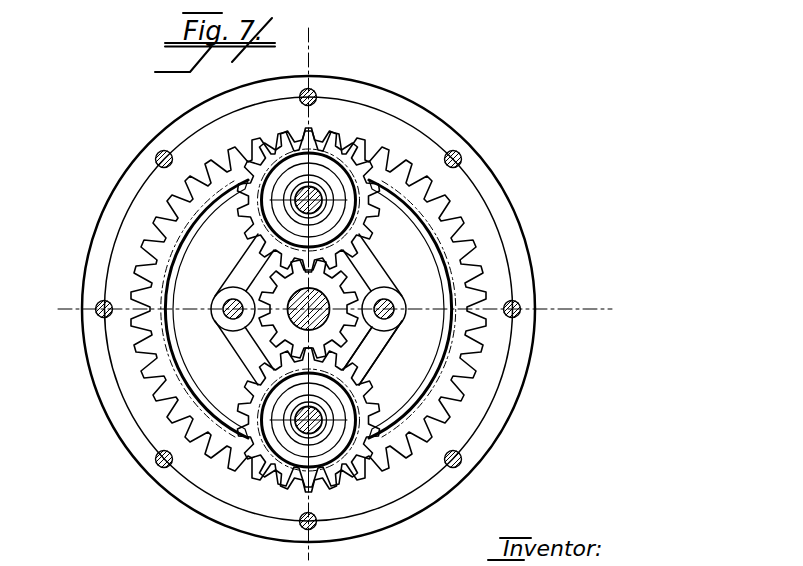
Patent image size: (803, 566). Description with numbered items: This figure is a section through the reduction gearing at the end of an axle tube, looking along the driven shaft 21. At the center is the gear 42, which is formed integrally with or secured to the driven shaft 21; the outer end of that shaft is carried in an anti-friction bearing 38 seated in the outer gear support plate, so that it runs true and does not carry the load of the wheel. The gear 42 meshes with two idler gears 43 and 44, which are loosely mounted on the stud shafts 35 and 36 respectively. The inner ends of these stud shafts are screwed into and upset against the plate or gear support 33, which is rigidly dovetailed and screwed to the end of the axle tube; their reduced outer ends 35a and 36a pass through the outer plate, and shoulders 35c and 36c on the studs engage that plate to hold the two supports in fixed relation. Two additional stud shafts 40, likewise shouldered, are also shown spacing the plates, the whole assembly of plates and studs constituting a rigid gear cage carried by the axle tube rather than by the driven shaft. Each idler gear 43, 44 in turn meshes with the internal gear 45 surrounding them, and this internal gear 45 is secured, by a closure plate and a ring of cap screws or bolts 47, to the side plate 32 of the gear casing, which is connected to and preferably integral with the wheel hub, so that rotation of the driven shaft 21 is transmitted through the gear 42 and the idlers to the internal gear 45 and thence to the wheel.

The driven shaft 21 is at (292, 322).
The side plate 32 is at (299, 309).
The plate or gear support 33 is at (367, 266).
The stud shaft 35 is at (298, 193).
The reduced outer end 35a is at (322, 185).
The shoulder 35c is at (314, 188).
The stud shaft 36 is at (299, 432).
The reduced outer end 36a is at (302, 428).
The shoulder 36c is at (316, 433).
The anti-friction bearing 38 is at (308, 271).
The stud shaft 40 is at (226, 301).
The gear 42 is at (367, 340).
The idler gear 43 is at (417, 213).
The idler gear 44 is at (366, 428).
The internal gear 45 is at (470, 250).
The cap screws or bolts 47 is at (460, 155).